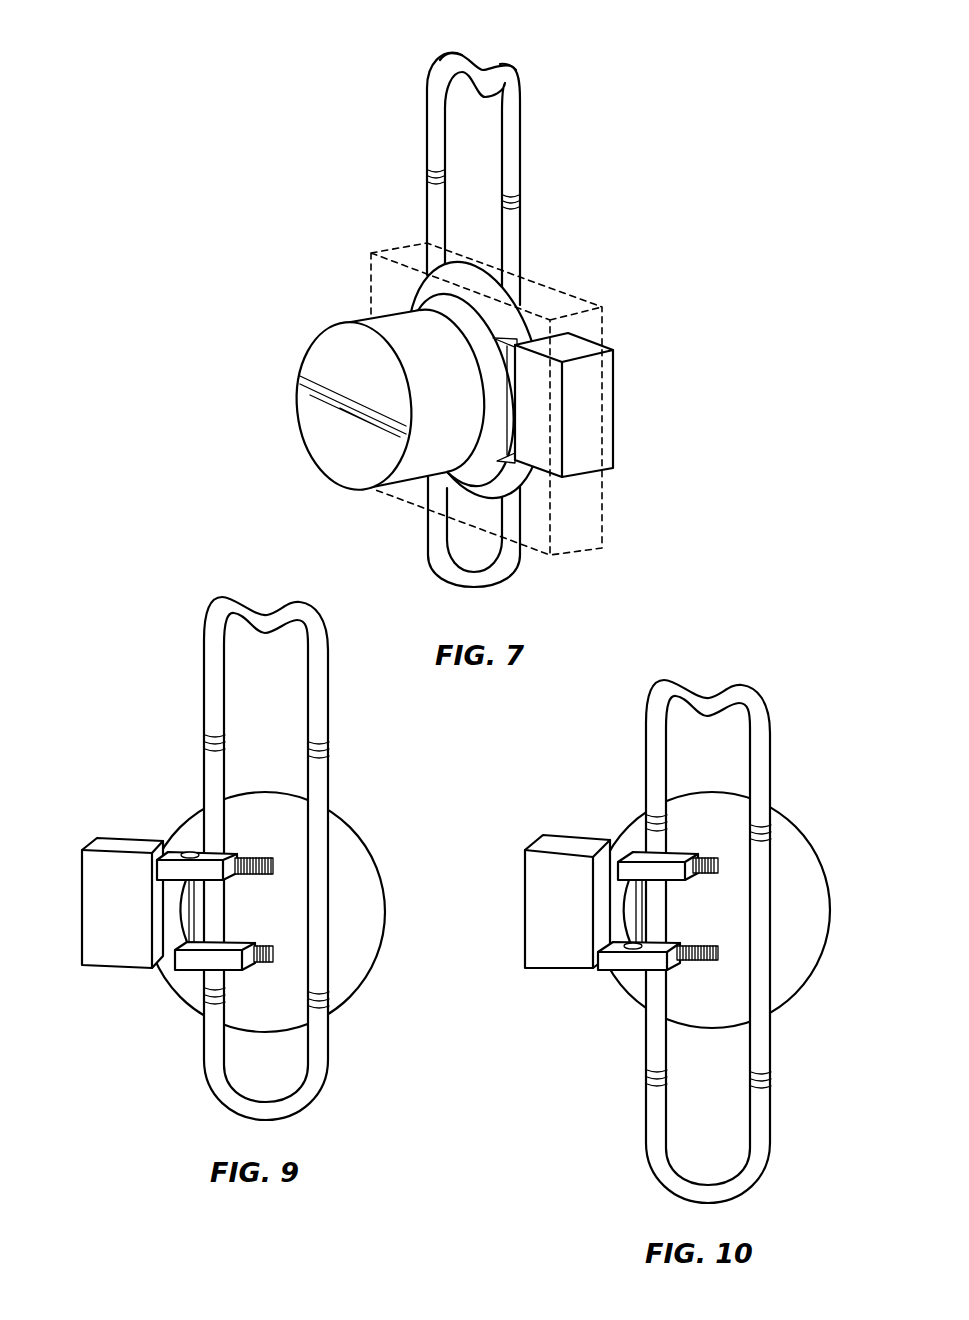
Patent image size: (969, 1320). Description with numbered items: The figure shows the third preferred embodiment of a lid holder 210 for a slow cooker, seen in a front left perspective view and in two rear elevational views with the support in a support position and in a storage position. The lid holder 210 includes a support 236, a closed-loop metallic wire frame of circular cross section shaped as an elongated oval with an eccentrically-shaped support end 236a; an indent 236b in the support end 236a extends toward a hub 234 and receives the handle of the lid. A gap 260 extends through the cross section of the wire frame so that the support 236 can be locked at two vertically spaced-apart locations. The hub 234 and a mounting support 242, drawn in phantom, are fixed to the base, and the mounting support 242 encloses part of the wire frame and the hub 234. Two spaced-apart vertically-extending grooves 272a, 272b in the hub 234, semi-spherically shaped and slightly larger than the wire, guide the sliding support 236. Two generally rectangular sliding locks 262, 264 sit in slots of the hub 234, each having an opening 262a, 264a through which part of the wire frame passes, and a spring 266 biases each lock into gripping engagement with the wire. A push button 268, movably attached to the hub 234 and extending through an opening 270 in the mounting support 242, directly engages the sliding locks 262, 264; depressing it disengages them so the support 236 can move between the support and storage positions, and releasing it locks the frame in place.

In FIG. 7, the lid holder 210 is at (444, 299).
In FIG. 7, the hub 234 is at (312, 354).
In FIG. 9, the hub 234 is at (365, 830).
In FIG. 10, the hub 234 is at (810, 830).
In FIG. 7, the support 236 is at (521, 173).
In FIG. 9, the support 236 is at (326, 1050).
In FIG. 10, the support 236 is at (768, 1045).
In FIG. 7, the support end 236a is at (468, 54).
In FIG. 7, the indent 236b is at (487, 72).
In FIG. 7, the mounting support 242 is at (365, 298).
In FIG. 9, the gap 260 is at (233, 850).
In FIG. 10, the gap 260 is at (636, 982).
In FIG. 9, the sliding lock 262 is at (178, 858).
In FIG. 10, the sliding lock 262 is at (636, 856).
In FIG. 9, the opening 262a is at (189, 852).
In FIG. 9, the sliding lock 264 is at (196, 986).
In FIG. 10, the sliding lock 264 is at (627, 960).
In FIG. 10, the opening 264a is at (628, 944).
In FIG. 9, the spring 266 is at (262, 963).
In FIG. 10, the spring 266 is at (697, 962).
In FIG. 7, the push button 268 is at (605, 418).
In FIG. 9, the push button 268 is at (85, 908).
In FIG. 10, the push button 268 is at (533, 892).
In FIG. 7, the opening 270 is at (597, 474).
In FIG. 9, the groove 272a is at (200, 997).
In FIG. 10, the groove 272a is at (670, 1012).
In FIG. 9, the groove 272b is at (325, 995).
In FIG. 10, the groove 272b is at (770, 980).